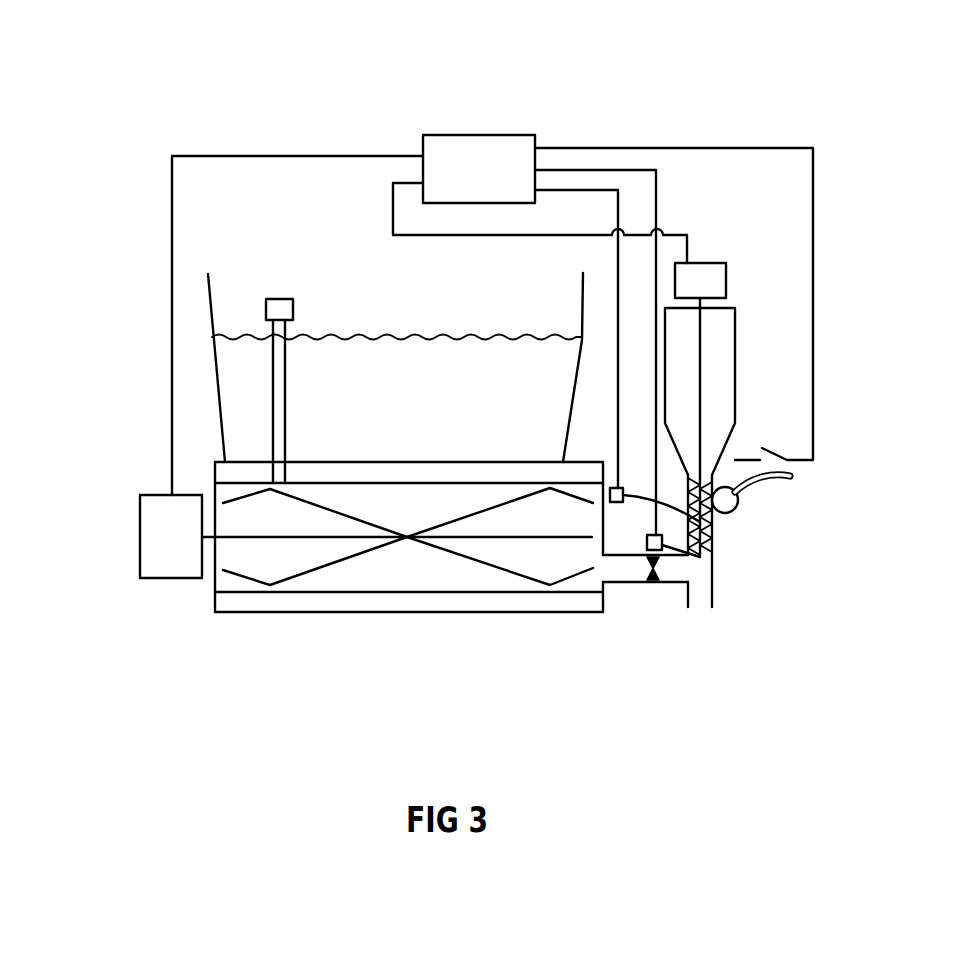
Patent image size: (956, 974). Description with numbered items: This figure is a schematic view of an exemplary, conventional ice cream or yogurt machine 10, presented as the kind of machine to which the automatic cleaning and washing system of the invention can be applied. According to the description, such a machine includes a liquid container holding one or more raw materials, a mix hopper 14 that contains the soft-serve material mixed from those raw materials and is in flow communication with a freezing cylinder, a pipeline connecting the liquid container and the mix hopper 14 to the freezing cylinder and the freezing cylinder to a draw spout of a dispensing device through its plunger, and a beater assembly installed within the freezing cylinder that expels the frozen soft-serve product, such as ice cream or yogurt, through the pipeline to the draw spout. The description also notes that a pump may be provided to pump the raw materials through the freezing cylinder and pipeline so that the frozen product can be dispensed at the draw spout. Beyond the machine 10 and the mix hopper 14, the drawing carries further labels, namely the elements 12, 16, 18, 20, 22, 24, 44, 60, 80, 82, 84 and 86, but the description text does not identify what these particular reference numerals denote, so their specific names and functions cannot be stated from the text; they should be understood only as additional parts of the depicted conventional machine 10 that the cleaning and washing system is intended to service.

The ice cream or yogurt machine 10 is at (318, 82).
The drum housing 12 is at (265, 602).
The mix hopper 14 is at (583, 297).
The liquid 16 is at (428, 350).
The level sensor 18 is at (293, 292).
The agitator screw 20 is at (341, 578).
The outlet chute 22 is at (607, 568).
The agitator motor 24 is at (140, 541).
The valve 44 is at (653, 587).
The screw motor 60 is at (722, 279).
The screw conveyor 80 is at (708, 558).
The pump 82 is at (700, 522).
The outlet nozzle 84 is at (762, 448).
The controller 86 is at (478, 146).